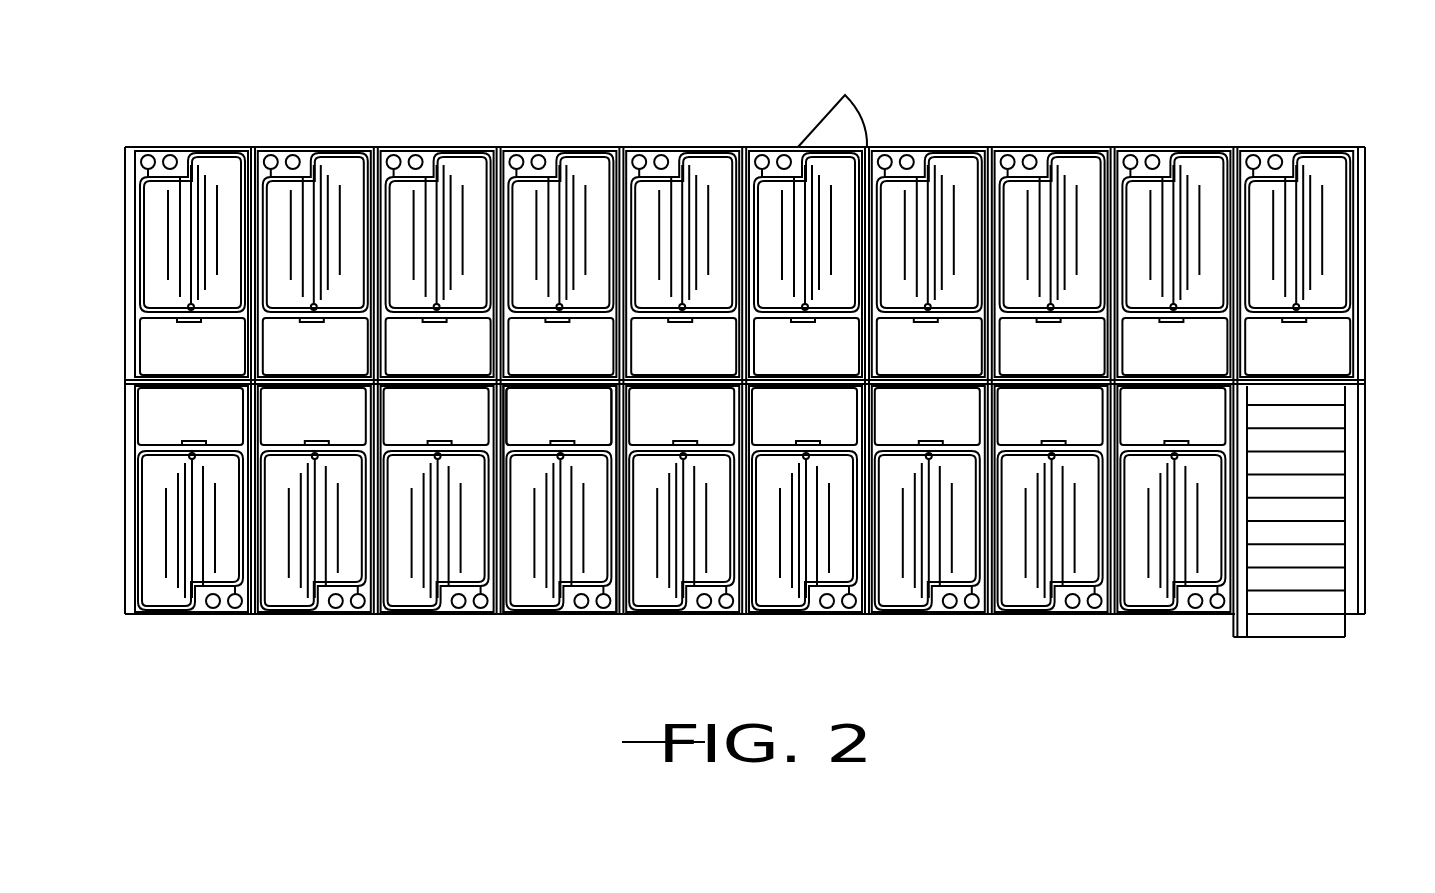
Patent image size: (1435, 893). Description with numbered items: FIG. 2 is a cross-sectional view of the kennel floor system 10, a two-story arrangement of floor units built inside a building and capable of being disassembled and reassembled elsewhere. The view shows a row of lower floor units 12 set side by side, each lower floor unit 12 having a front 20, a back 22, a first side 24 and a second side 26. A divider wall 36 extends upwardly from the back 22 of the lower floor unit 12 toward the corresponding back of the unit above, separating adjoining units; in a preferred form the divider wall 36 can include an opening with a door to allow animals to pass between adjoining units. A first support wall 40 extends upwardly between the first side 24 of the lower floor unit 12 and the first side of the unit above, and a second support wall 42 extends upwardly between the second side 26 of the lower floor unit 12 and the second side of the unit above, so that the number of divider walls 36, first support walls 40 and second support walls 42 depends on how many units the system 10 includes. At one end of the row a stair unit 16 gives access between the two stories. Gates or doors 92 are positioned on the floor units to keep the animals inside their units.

The kennel floor system 10 is at (780, 384).
The lower floor unit 12 is at (743, 562).
The stair unit 16 is at (1315, 512).
The front 20 is at (559, 562).
The back 22 is at (523, 390).
The first side 24 is at (627, 448).
The second side 26 is at (503, 437).
The divider wall 36 is at (553, 381).
The first support wall 40 is at (628, 613).
The second support wall 42 is at (498, 613).
The gates or doors 92 is at (993, 613).